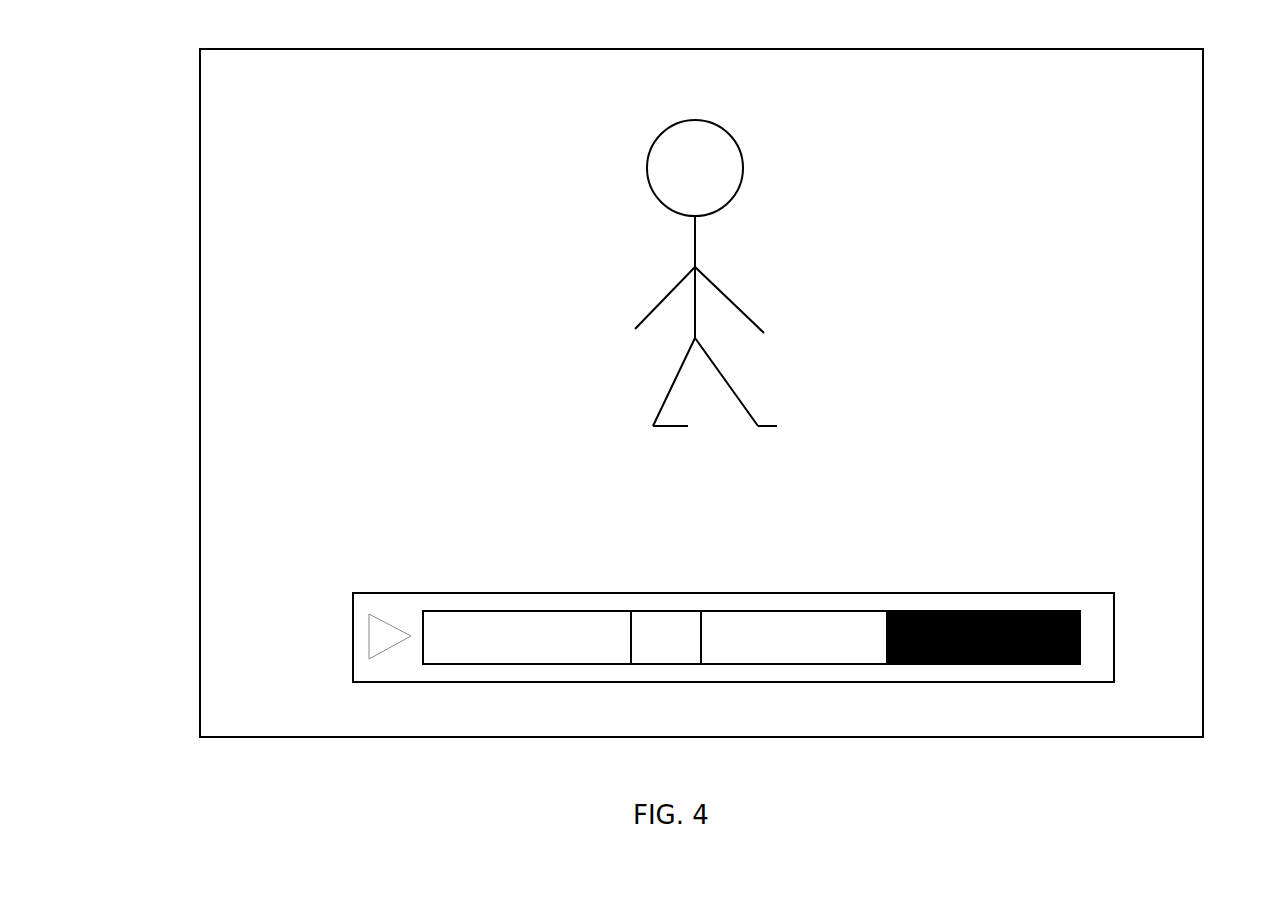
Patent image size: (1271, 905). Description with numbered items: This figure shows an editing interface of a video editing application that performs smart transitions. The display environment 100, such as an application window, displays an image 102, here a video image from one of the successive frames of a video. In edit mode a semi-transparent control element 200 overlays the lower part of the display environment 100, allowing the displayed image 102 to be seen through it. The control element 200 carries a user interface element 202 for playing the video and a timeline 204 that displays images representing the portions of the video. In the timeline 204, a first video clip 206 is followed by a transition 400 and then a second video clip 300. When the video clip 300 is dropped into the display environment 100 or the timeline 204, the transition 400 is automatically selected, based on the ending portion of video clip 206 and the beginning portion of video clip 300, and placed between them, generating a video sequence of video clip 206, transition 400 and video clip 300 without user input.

The display environment 100 is at (158, 124).
The image 102 is at (562, 221).
The control element 200 is at (762, 615).
The user interface element 202 is at (352, 634).
The timeline 204 is at (1100, 633).
The video clip 206 is at (527, 637).
The transition 400 is at (666, 637).
The video clip 300 is at (794, 637).